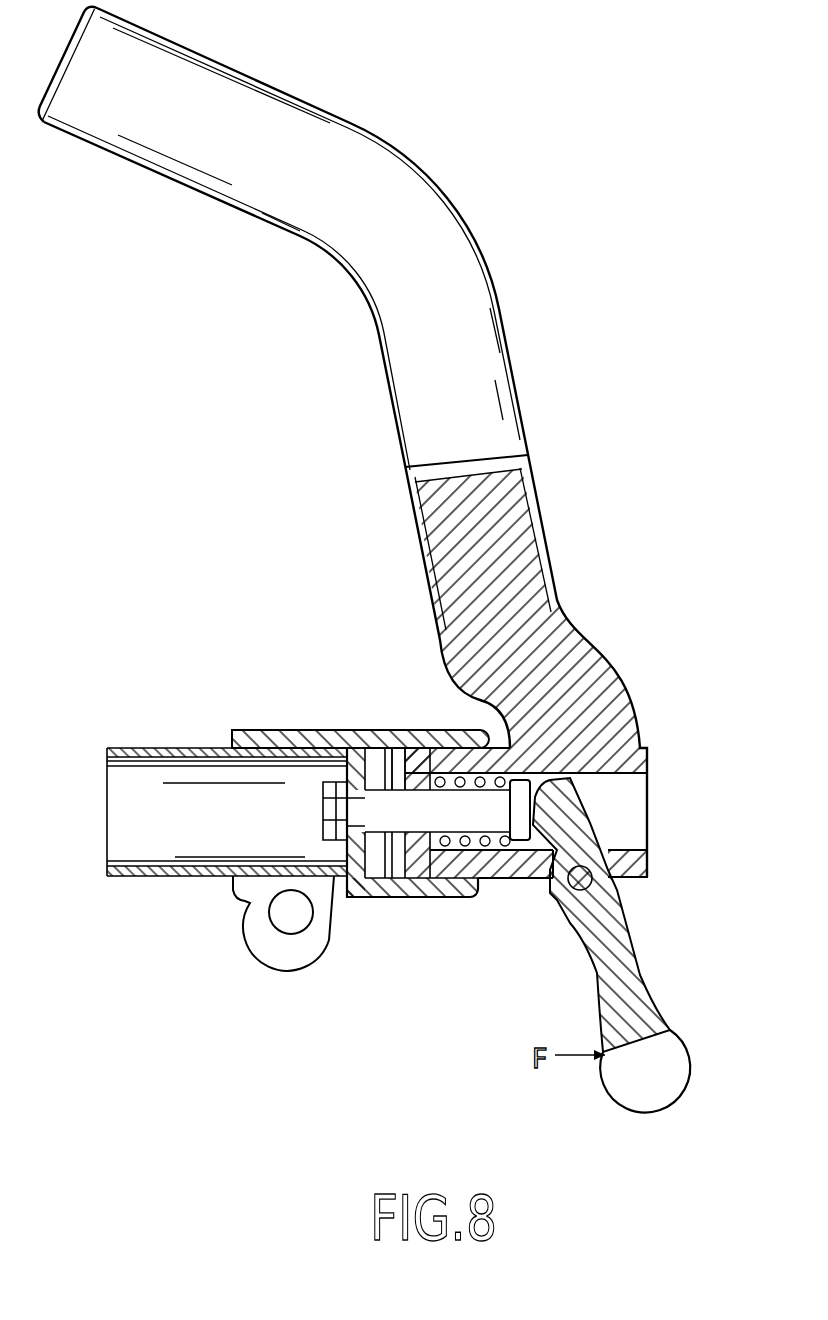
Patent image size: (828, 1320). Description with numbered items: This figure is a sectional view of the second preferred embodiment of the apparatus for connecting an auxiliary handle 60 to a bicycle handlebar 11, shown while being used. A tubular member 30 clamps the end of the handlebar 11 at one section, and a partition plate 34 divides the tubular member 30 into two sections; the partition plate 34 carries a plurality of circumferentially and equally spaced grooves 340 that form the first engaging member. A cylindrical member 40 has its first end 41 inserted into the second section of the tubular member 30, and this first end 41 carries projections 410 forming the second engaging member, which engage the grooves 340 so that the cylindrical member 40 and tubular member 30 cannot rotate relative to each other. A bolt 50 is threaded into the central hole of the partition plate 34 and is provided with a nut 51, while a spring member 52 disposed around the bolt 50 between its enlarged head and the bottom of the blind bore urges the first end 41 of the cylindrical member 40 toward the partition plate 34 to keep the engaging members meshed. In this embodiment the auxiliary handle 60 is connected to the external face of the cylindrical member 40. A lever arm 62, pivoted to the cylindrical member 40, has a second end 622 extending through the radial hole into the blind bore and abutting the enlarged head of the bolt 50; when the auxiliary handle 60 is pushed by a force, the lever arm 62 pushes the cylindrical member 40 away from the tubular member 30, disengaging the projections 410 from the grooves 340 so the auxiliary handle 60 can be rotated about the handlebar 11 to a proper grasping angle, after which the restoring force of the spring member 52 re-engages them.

The handlebar 11 is at (162, 873).
The tubular member 30 is at (373, 897).
The partition plate 34 is at (367, 748).
The grooves 340 is at (370, 757).
The first end of the cylindrical member 41 is at (403, 762).
The projections 410 is at (402, 767).
The cylindrical member 40 is at (517, 878).
The bolt 50 is at (422, 897).
The nut 51 is at (337, 813).
The spring member 52 is at (468, 878).
The auxiliary handle 60 is at (549, 562).
The lever arm 62 is at (630, 983).
The second end of the lever arm 622 is at (537, 810).